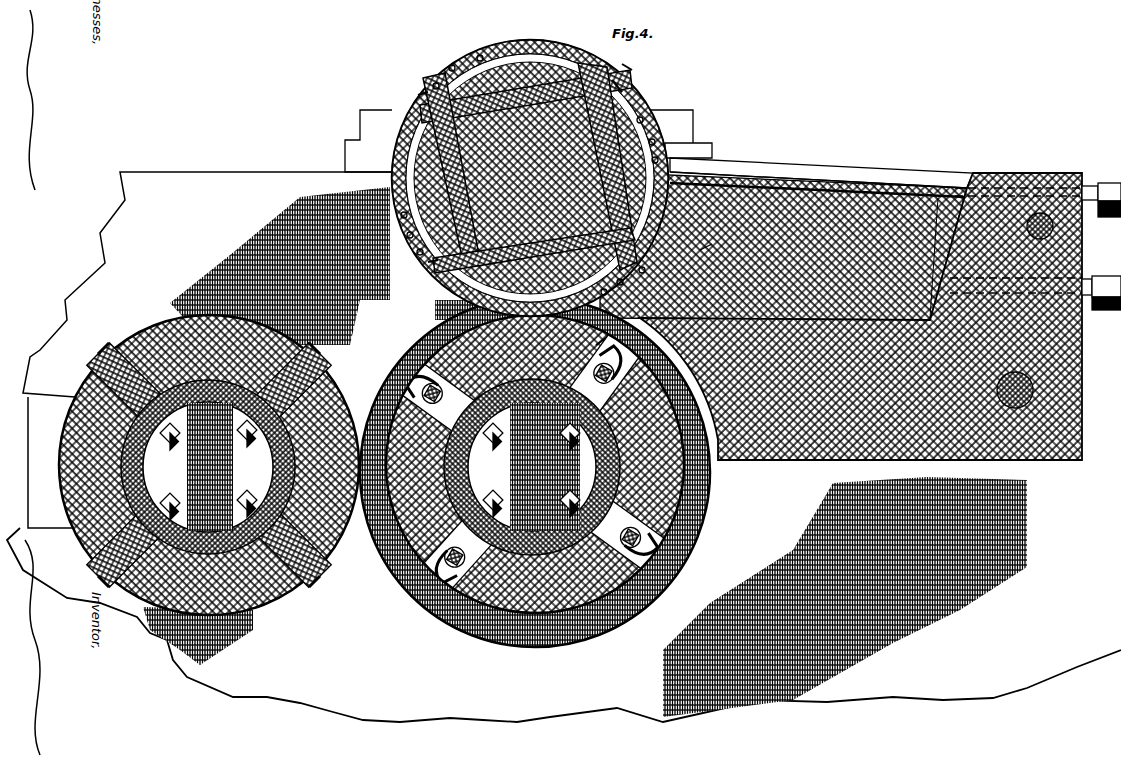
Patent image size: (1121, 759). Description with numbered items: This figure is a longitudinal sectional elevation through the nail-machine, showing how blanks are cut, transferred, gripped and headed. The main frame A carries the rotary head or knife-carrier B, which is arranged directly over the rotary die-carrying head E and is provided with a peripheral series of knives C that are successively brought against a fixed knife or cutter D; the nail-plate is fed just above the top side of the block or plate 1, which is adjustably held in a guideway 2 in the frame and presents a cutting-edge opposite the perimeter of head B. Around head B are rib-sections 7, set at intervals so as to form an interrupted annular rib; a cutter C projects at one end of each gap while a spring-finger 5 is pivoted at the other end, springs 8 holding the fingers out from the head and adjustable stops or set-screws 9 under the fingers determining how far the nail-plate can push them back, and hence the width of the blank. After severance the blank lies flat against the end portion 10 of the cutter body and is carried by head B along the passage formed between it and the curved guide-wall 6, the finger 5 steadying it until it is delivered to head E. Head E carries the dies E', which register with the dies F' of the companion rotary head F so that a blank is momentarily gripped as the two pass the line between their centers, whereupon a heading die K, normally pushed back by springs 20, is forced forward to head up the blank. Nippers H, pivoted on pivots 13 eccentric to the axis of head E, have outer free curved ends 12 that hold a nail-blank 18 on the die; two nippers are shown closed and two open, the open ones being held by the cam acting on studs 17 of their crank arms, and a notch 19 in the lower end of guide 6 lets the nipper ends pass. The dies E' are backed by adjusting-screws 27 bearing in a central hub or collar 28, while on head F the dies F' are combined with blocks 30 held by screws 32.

The main frame A is at (880, 361).
The rotary head or knife-carrier B is at (528, 163).
The knives or cutters C is at (430, 82).
The fixed knife or cutter D is at (720, 180).
The rotary die-carrying head E is at (545, 462).
The dies E' is at (536, 486).
The rotary die-carrying head F is at (197, 466).
The dies F' is at (191, 456).
The nippers H is at (525, 465).
The heading tools or dies K is at (650, 583).
The block or plate 1 is at (852, 178).
The guideway 2 is at (900, 182).
The spring-fingers 5 is at (454, 64).
The curved guide-wall 6 is at (710, 240).
The rib-sections 7 is at (405, 100).
The springs 8 is at (481, 54).
The adjustable stops or set-screws 9 is at (437, 82).
The end portion of the cutter body 10 is at (418, 95).
The outer free curved ends of the nippers 12 is at (660, 568).
The nipper pivots 13 is at (531, 465).
The studs 17 is at (640, 360).
The nail-blank 18 is at (408, 384).
The notch 19 is at (456, 325).
The springs 20 is at (616, 82).
The adjusting-screws 27 is at (533, 466).
The hub or collar 28 is at (468, 455).
The blocks 30 is at (95, 362).
The screws 32 is at (208, 470).